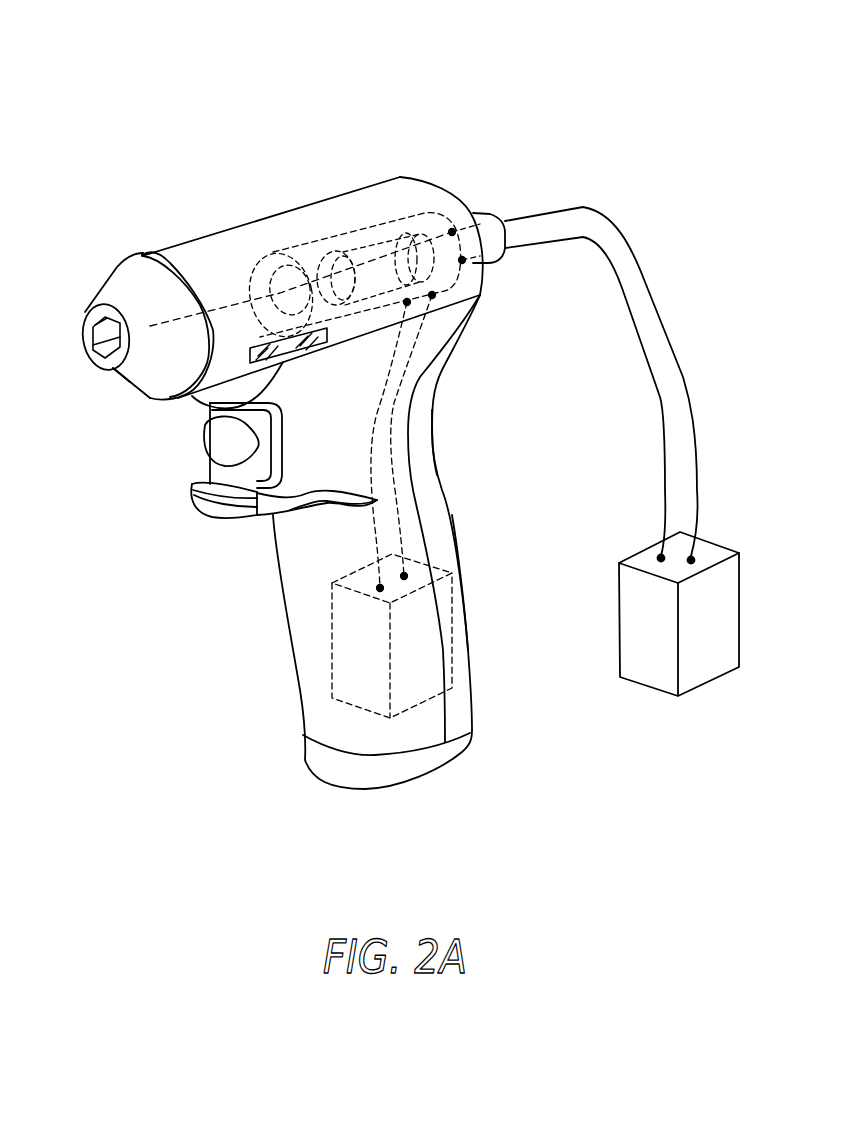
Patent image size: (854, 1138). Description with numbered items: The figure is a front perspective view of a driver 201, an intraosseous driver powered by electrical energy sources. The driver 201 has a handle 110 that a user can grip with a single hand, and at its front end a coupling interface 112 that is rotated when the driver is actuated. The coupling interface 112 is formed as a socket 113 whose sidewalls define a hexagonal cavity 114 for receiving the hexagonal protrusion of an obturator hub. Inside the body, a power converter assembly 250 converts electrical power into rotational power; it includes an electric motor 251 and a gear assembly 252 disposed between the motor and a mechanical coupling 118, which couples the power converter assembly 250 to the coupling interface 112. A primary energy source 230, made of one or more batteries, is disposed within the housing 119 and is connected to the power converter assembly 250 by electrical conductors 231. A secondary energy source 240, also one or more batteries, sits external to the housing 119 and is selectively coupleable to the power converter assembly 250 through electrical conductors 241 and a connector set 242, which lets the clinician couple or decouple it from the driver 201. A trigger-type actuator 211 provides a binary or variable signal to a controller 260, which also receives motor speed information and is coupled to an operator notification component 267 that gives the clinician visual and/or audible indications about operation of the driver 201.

The driver 201 is at (704, 102).
The handle 110 is at (300, 610).
The coupling interface 112 is at (87, 370).
The socket 113 is at (113, 362).
The cavity 114 is at (95, 335).
The mechanical coupling 118 is at (232, 303).
The housing 119 is at (468, 652).
The actuator 211 is at (232, 445).
The primary energy source 230 is at (452, 598).
The electrical conductors 231 is at (390, 450).
The secondary energy source 240 is at (738, 598).
The electrical conductors 241 is at (690, 422).
The connector set 242 is at (493, 217).
The power converter assembly 250 is at (378, 224).
The electric motor 251 is at (350, 247).
The gear assembly 252 is at (303, 262).
The controller 260 is at (437, 226).
The operator notification component 267 is at (276, 362).